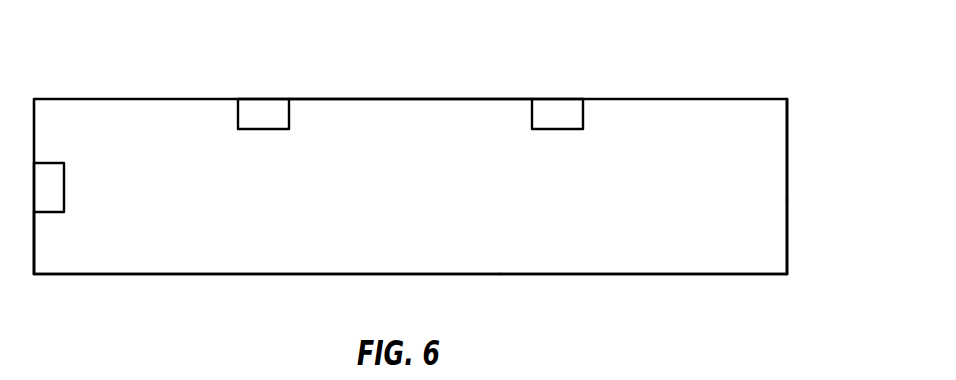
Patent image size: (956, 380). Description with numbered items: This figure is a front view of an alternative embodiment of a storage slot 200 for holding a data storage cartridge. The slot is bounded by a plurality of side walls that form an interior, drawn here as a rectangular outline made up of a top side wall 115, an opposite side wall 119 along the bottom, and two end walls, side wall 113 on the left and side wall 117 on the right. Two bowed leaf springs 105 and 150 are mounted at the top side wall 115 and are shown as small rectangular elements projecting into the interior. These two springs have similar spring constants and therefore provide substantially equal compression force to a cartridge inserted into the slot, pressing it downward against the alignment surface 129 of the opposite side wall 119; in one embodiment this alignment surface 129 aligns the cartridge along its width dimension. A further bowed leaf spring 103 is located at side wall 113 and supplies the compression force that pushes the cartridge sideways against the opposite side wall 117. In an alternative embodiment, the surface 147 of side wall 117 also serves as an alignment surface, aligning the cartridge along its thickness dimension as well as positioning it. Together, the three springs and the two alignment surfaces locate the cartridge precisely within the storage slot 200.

The storage slot 200 is at (806, 72).
The bowed leaf spring 103 is at (64, 185).
The side wall 113 is at (34, 253).
The bowed leaf spring 105 is at (263, 129).
The bowed leaf spring 150 is at (557, 129).
The top side wall 115 is at (640, 99).
The alignment surface 147 is at (787, 188).
The side wall 117 is at (787, 230).
The alignment surface 129 is at (410, 274).
The side wall 119 is at (652, 274).